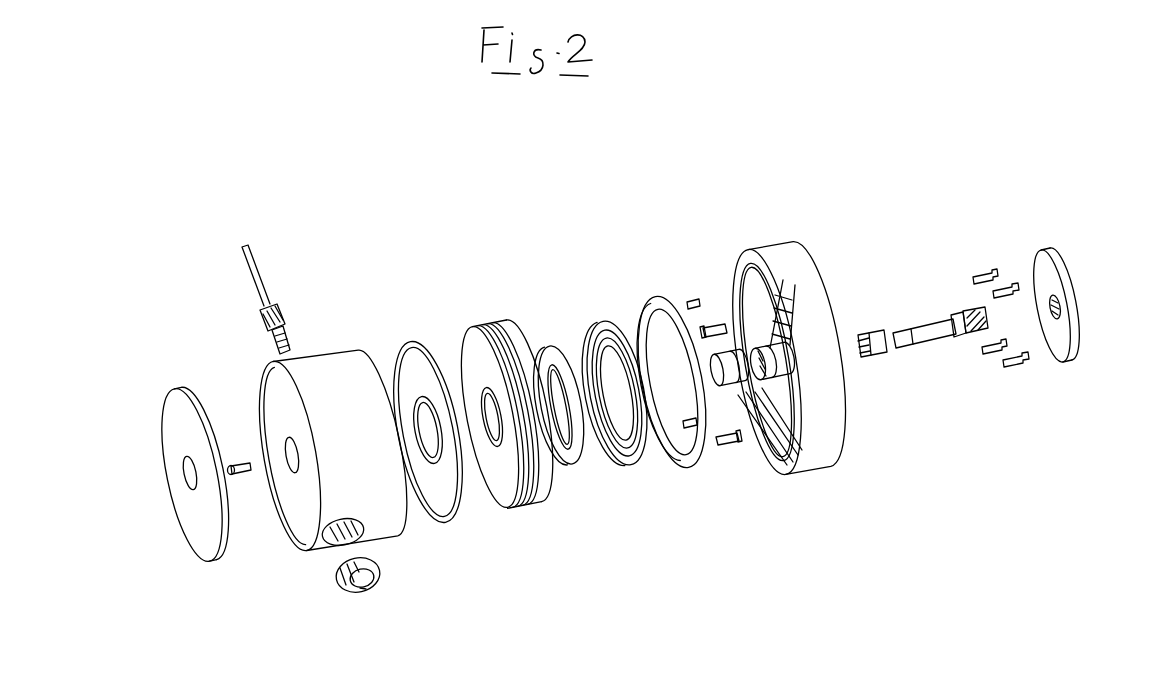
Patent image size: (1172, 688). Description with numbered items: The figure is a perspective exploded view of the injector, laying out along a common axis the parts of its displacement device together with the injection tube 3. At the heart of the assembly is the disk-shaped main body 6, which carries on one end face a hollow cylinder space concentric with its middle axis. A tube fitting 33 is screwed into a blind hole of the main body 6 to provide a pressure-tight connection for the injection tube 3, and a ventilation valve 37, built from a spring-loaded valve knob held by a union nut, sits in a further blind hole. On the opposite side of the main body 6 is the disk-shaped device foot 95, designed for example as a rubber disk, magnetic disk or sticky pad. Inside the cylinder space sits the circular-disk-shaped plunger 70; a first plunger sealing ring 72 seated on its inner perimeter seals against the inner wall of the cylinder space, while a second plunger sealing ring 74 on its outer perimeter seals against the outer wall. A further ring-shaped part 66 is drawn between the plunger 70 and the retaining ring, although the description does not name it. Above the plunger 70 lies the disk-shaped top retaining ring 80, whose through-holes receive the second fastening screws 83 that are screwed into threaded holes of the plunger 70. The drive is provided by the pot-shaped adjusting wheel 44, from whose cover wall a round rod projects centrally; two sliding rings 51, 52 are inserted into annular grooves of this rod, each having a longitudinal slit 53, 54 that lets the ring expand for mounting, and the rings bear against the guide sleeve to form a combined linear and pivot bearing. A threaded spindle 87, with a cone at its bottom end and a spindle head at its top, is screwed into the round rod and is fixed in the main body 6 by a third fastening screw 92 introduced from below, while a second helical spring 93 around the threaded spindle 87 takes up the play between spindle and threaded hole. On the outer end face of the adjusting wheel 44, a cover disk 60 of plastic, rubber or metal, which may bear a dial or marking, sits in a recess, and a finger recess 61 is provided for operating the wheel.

The injection tube 3 is at (251, 252).
The main body 6 is at (327, 349).
The tube fitting 33 is at (268, 333).
The ventilation valve 37 is at (383, 580).
The adjusting wheel 44 is at (815, 381).
The sliding ring 51 is at (780, 479).
The sliding ring 52 is at (724, 392).
The slit 53 is at (722, 454).
The slit 54 is at (797, 467).
The cover disk 60 is at (1080, 288).
The finger recess 61 is at (1024, 364).
The sealing ring 66 is at (572, 463).
The plunger 70 is at (472, 326).
The first plunger sealing ring 72 is at (435, 447).
The second plunger sealing ring 74 is at (460, 474).
The top retaining ring 80 is at (687, 470).
The second fastening screws 83 is at (713, 324).
The threaded spindle 87 is at (922, 324).
The third fastening screw 92 is at (238, 460).
The second helical spring 93 is at (867, 332).
The device foot 95 is at (160, 425).